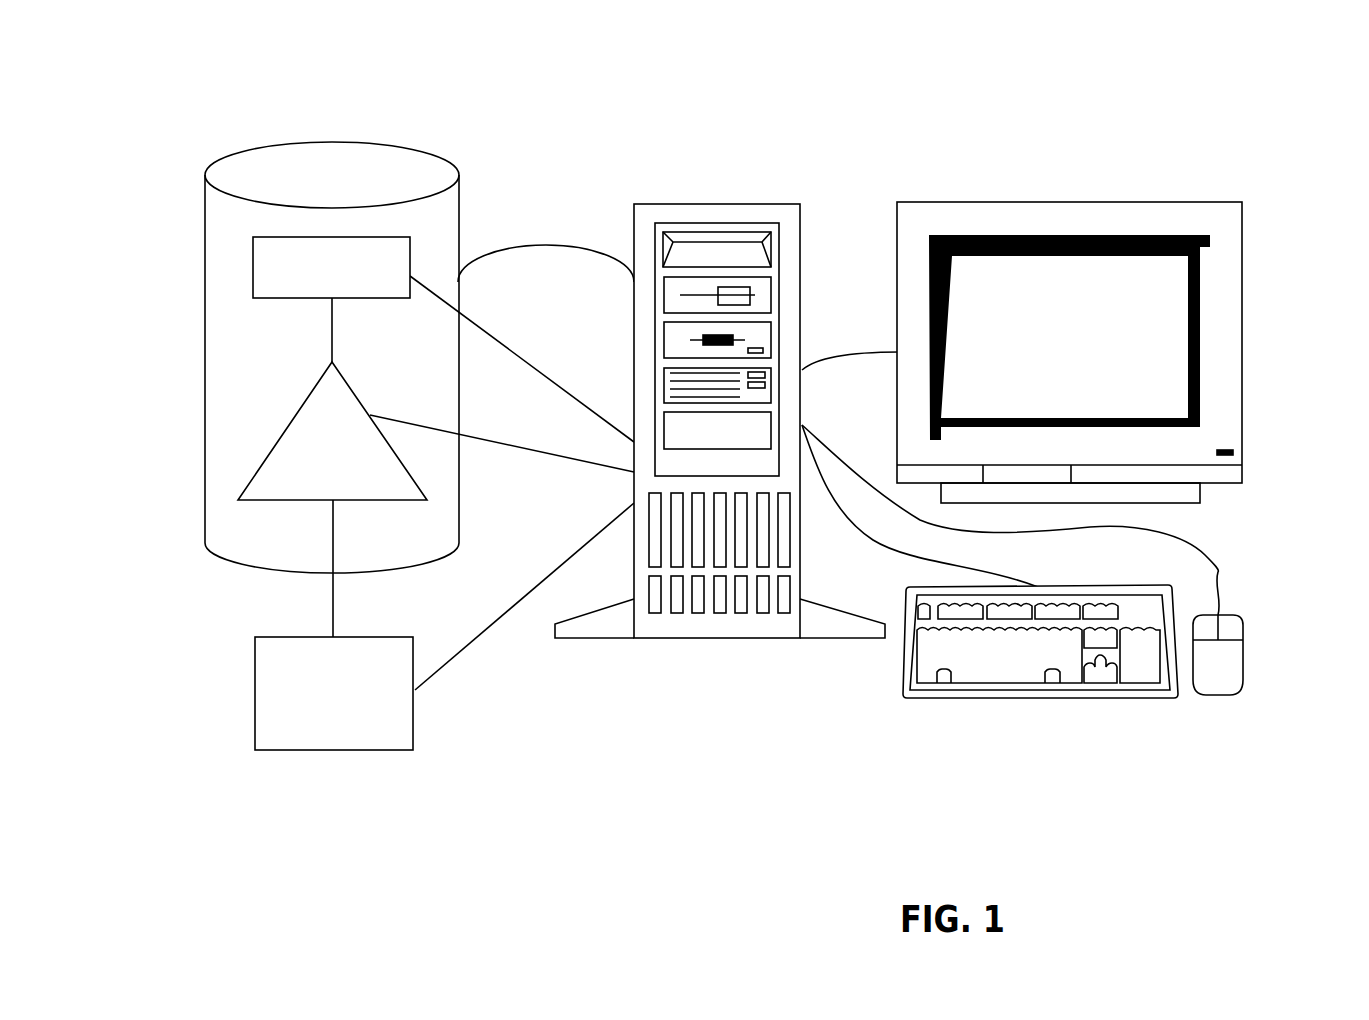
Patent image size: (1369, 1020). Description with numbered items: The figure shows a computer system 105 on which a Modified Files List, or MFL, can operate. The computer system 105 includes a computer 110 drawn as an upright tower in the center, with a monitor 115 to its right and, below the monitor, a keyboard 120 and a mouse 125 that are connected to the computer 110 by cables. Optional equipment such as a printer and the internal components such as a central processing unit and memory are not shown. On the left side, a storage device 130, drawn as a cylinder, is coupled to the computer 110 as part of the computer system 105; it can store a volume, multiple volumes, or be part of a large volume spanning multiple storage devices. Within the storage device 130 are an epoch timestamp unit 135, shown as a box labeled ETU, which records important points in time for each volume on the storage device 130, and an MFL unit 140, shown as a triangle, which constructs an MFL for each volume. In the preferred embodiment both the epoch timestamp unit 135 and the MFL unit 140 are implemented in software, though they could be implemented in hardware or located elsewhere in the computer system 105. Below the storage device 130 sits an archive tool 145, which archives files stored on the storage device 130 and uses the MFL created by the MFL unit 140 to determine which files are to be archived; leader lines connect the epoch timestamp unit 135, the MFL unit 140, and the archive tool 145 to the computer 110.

The computer system 105 is at (614, 91).
The computer 110 is at (760, 203).
The monitor 115 is at (1020, 202).
The keyboard 120 is at (1025, 700).
The mouse 125 is at (1245, 650).
The storage device 130 is at (337, 140).
The epoch timestamp unit 135 is at (253, 277).
The MFL unit 140 is at (254, 478).
The archive tool 145 is at (255, 708).